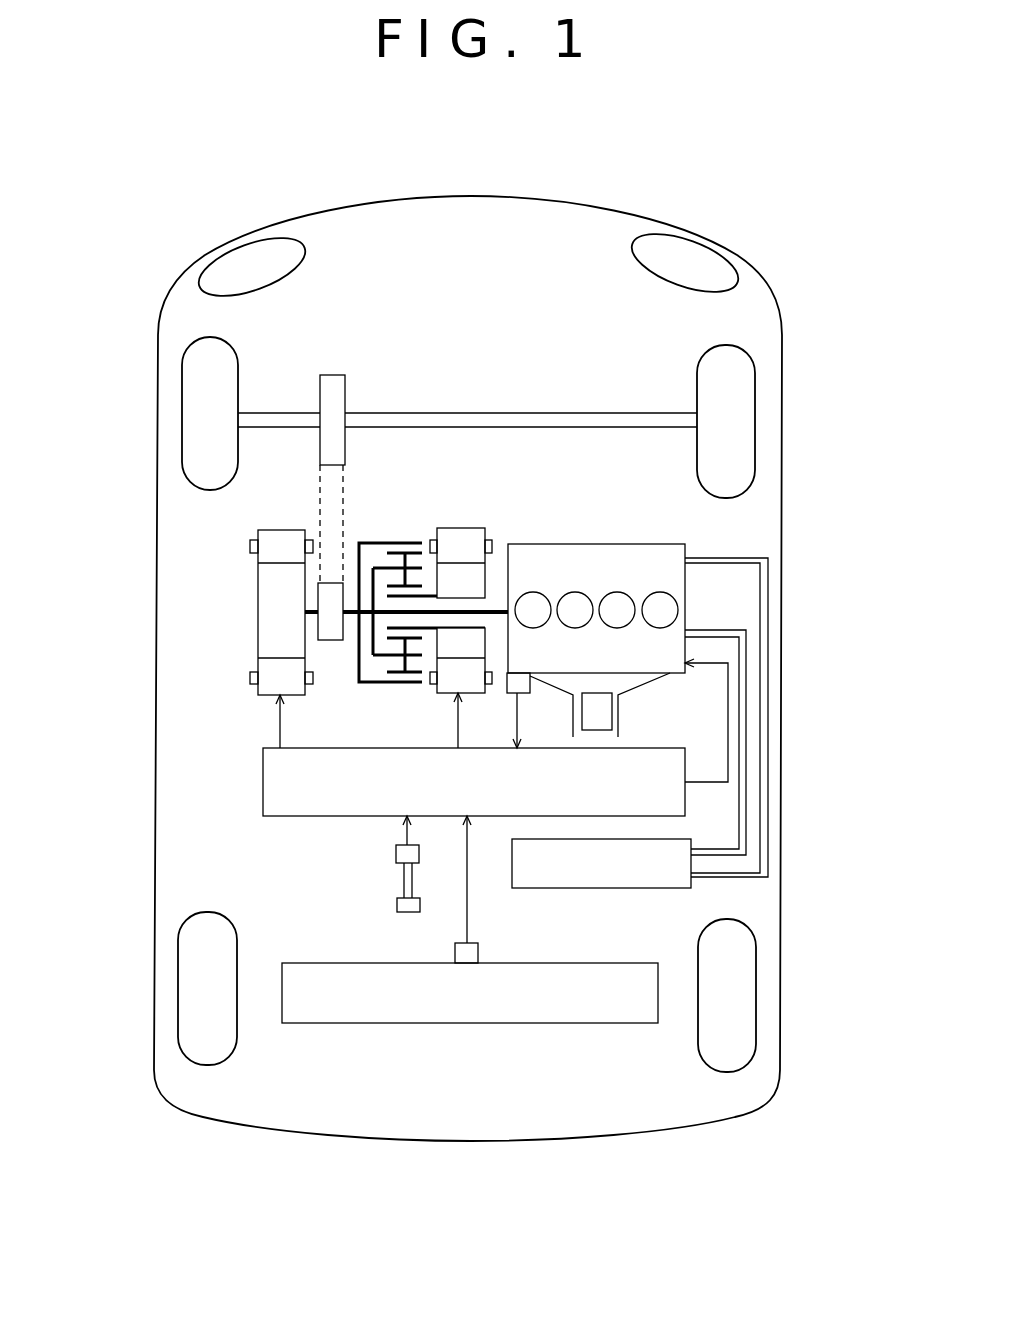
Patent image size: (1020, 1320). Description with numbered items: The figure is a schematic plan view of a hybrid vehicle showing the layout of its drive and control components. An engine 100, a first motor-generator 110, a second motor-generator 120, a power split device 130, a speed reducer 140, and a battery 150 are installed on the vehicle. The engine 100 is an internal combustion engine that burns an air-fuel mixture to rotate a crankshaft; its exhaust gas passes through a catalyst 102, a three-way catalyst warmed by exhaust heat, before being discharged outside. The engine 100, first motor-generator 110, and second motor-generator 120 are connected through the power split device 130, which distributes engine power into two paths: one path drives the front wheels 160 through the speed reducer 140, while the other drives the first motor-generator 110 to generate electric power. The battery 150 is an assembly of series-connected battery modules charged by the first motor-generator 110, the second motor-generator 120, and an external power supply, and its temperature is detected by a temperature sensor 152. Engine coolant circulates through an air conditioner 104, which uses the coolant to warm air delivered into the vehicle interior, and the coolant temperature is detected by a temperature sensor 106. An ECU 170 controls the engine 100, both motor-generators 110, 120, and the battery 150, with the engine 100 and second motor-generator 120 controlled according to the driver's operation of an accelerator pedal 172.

The engine 100 is at (543, 545).
The catalyst 102 is at (612, 715).
The air conditioner 104 is at (633, 888).
The temperature sensor 106 is at (530, 684).
The first motor-generator 110 is at (462, 528).
The second motor-generator 120 is at (258, 610).
The power split device 130 is at (393, 545).
The speed reducer 140 is at (332, 357).
The battery 150 is at (435, 1023).
The temperature sensor 152 is at (480, 952).
The front wheels 160 is at (182, 427).
The ECU 170 is at (263, 788).
The accelerator pedal 172 is at (396, 855).